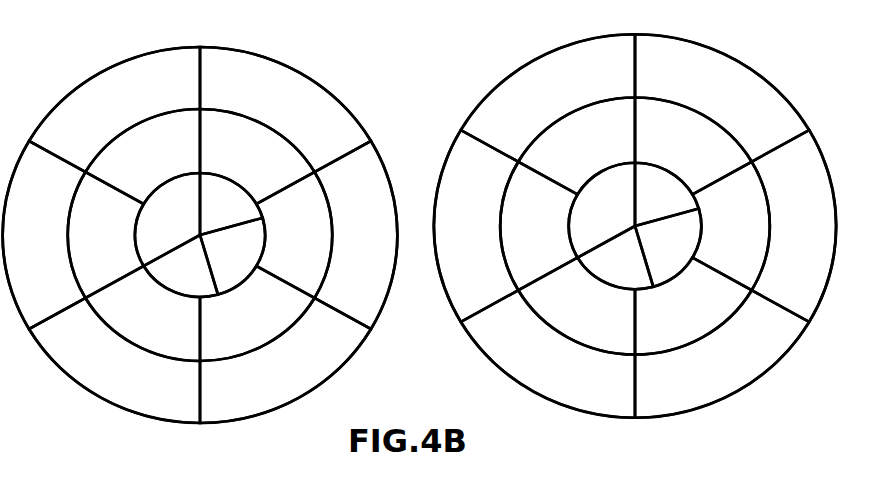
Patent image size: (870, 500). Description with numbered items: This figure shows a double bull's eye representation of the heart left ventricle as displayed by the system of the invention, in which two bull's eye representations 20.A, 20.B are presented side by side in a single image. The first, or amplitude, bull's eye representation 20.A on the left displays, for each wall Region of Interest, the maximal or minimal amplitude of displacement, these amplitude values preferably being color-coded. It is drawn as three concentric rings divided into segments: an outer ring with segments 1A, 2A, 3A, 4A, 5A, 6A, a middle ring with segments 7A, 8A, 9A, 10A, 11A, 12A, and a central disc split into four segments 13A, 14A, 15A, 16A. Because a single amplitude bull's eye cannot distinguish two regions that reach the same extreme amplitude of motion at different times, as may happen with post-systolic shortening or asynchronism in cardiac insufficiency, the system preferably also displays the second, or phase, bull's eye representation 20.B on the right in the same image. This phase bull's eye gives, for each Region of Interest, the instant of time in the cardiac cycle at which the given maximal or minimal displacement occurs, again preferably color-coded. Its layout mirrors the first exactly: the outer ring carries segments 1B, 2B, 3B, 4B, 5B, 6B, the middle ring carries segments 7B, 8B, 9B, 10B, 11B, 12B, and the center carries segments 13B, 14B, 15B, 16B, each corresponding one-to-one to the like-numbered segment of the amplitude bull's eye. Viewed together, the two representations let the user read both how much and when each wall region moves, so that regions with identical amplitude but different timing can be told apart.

The first bull's eye representation 20.A is at (146, 52).
The second bull's eye representation 20.B is at (776, 87).
The segment 1A is at (285, 109).
The segment 2A is at (114, 109).
The segment 3A is at (44, 235).
The segment 4A is at (114, 360).
The segment 5A is at (285, 360).
The segment 6A is at (356, 235).
The segment 7A is at (257, 156).
The segment 8A is at (142, 156).
The segment 9A is at (106, 235).
The segment 10A is at (142, 313).
The segment 11A is at (257, 313).
The segment 12A is at (294, 235).
The segment 13A is at (231, 204).
The segment 14A is at (167, 219).
The segment 15A is at (181, 266).
The segment 16A is at (232, 256).
The segment 1B is at (722, 98).
The segment 2B is at (548, 98).
The segment 3B is at (476, 226).
The segment 4B is at (548, 354).
The segment 5B is at (722, 354).
The segment 6B is at (794, 226).
The segment 7B is at (693, 145).
The segment 8B is at (576, 145).
The segment 9B is at (538, 226).
The segment 10B is at (576, 306).
The segment 11B is at (693, 306).
The segment 12B is at (730, 226).
The segment 13B is at (667, 194).
The segment 14B is at (602, 210).
The segment 15B is at (616, 257).
The segment 16B is at (668, 248).